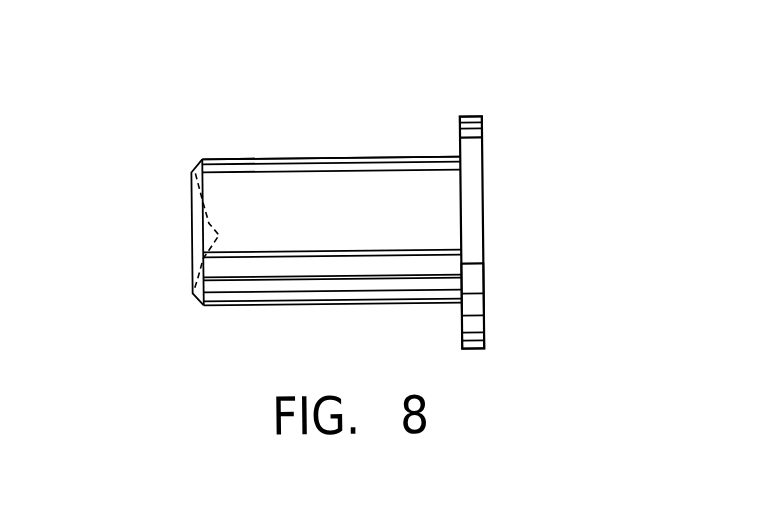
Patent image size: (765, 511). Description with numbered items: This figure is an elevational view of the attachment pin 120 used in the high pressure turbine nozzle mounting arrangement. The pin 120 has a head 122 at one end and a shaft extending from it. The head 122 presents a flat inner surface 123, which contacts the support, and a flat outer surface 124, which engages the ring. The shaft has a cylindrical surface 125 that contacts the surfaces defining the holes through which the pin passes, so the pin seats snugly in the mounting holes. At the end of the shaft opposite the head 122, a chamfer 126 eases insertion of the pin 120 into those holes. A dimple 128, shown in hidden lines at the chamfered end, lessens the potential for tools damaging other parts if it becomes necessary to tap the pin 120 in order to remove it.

The attachment pin 120 is at (360, 222).
The head 122 is at (477, 207).
The flat inner surface 123 is at (461, 126).
The flat outer surface 124 is at (481, 261).
The cylindrical surface 125 is at (364, 157).
The chamfer 126 is at (199, 164).
The dimple 128 is at (190, 226).